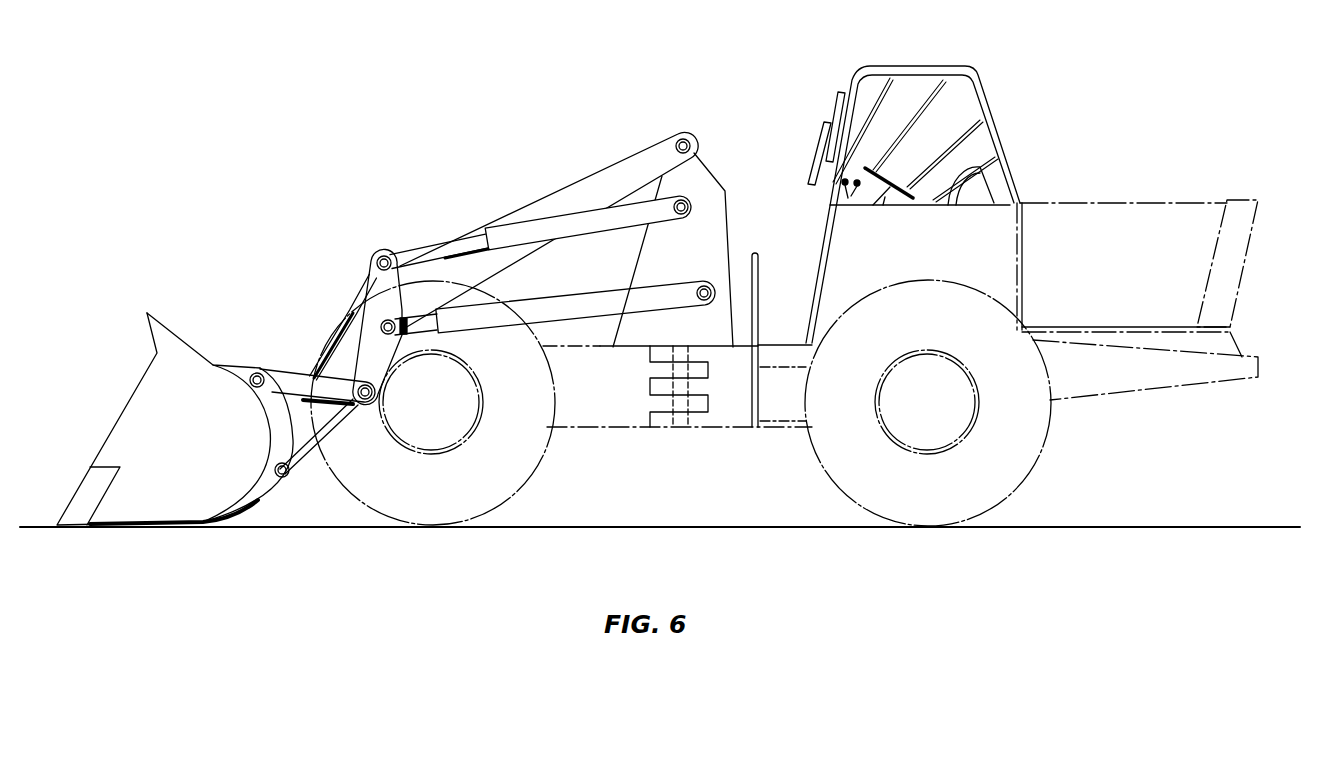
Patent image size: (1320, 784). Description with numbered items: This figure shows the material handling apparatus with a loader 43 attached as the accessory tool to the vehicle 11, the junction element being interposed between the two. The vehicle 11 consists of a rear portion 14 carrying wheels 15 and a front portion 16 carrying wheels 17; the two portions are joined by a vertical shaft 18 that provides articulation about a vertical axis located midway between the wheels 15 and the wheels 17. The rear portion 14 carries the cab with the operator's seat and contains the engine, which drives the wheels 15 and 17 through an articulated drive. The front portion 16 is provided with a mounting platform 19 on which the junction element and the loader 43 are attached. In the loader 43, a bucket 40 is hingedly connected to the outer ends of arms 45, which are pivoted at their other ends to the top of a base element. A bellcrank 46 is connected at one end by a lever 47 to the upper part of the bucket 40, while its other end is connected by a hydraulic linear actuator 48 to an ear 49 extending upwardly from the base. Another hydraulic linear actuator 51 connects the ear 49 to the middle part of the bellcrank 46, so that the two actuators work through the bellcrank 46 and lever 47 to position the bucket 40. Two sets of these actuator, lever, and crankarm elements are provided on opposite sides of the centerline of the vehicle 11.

The vehicle 11 is at (1073, 205).
The rear portion 14 is at (1180, 374).
The wheels 15 is at (1023, 472).
The front portion 16 is at (556, 428).
The wheels 17 is at (473, 505).
The vertical shaft 18 is at (668, 428).
The mounting platform 19 is at (583, 347).
The bucket 40 is at (624, 161).
The loader 43 is at (200, 372).
The arms 45 is at (346, 346).
The bellcrank 46 is at (377, 270).
The lever 47 is at (300, 374).
The hydraulic linear actuator 48 is at (537, 233).
The ear 49 is at (727, 215).
The hydraulic linear actuator 51 is at (556, 305).